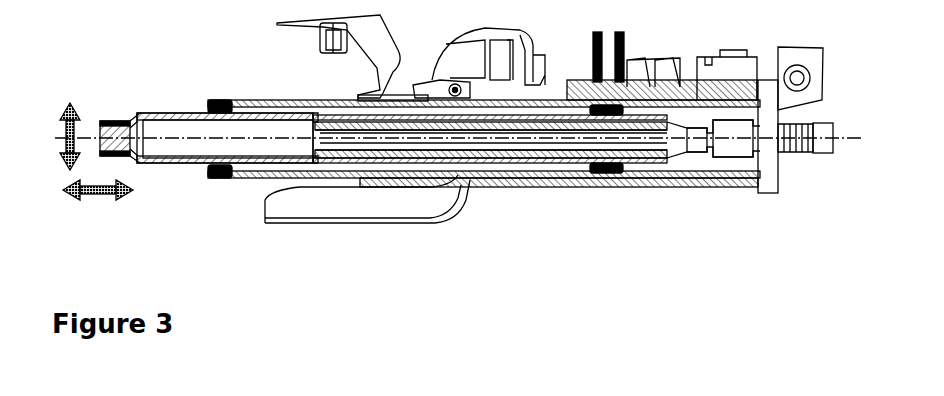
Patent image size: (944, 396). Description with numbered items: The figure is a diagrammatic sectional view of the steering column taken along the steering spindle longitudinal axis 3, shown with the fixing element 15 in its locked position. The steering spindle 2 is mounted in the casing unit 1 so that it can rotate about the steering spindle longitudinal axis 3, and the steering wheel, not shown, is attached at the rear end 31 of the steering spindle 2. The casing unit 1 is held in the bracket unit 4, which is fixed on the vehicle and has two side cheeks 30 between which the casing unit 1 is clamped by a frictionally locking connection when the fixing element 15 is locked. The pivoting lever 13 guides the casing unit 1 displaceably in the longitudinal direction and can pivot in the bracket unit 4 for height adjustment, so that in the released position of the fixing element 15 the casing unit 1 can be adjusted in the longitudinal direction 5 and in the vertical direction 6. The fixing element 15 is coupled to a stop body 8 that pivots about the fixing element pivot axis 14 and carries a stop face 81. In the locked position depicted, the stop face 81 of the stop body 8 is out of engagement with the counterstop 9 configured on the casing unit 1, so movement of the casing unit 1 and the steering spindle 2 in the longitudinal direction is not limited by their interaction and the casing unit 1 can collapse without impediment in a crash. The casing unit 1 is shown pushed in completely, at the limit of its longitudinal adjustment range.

The casing unit 1 is at (239, 173).
The steering spindle 2 is at (155, 160).
The steering spindle longitudinal axis 3 is at (181, 141).
The bracket unit 4 is at (447, 37).
The longitudinal adjustment direction 5 is at (66, 138).
The vertical adjustment direction 6 is at (108, 194).
The stop body 8 is at (418, 136).
The counterstop 9 is at (360, 92).
The pivoting lever 13 is at (303, 202).
The fixing element pivot axis 14 is at (448, 150).
The fixing element 15 is at (447, 87).
The side cheeks 30 is at (498, 60).
The rear end of the steering spindle 31 is at (116, 122).
The stop face 81 is at (412, 88).